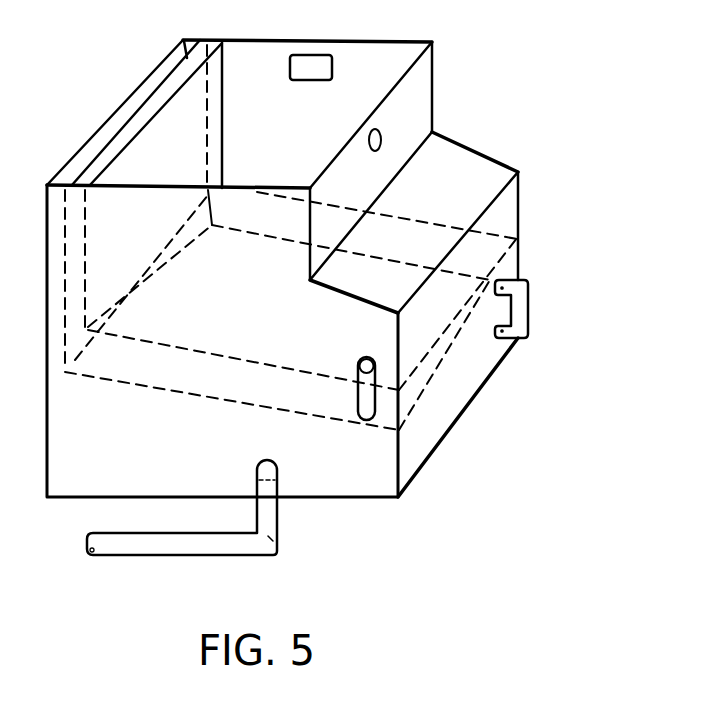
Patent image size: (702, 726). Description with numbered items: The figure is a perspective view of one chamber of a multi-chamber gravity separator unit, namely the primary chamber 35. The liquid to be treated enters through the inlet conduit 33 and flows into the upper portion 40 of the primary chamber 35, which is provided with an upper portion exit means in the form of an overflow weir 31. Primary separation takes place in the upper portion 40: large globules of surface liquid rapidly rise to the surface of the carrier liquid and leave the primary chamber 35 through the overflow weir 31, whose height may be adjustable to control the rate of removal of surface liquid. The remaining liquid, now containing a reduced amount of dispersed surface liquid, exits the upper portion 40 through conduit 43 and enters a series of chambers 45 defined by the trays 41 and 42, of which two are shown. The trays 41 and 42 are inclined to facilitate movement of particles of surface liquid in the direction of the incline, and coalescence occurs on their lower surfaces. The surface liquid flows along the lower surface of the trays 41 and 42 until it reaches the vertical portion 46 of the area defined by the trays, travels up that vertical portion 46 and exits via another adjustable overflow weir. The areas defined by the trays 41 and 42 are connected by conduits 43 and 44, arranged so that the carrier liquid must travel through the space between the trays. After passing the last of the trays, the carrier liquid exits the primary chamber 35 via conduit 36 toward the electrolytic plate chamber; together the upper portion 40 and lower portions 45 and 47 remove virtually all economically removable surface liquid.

The overflow weir 31 is at (308, 58).
The inlet conduit 33 is at (383, 137).
The primary chamber 35 is at (523, 210).
The conduit 36 is at (263, 542).
The upper portion 40 is at (266, 151).
The tray 41 is at (440, 338).
The tray 42 is at (441, 368).
The conduit 43 is at (352, 408).
The conduit 44 is at (528, 305).
The series of chambers 45 is at (291, 310).
The vertical portion 46 is at (140, 120).
The lower portion 47 is at (222, 341).